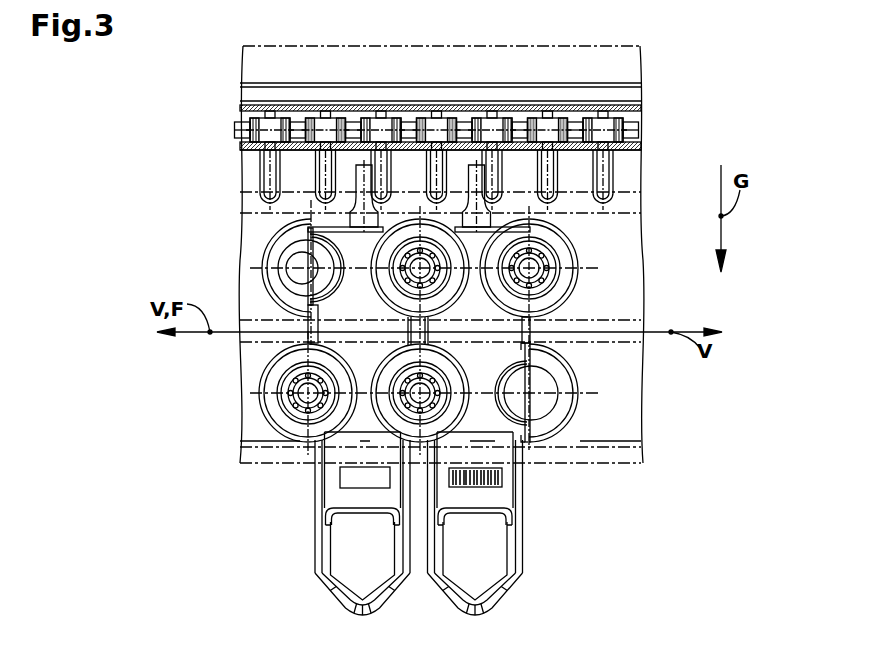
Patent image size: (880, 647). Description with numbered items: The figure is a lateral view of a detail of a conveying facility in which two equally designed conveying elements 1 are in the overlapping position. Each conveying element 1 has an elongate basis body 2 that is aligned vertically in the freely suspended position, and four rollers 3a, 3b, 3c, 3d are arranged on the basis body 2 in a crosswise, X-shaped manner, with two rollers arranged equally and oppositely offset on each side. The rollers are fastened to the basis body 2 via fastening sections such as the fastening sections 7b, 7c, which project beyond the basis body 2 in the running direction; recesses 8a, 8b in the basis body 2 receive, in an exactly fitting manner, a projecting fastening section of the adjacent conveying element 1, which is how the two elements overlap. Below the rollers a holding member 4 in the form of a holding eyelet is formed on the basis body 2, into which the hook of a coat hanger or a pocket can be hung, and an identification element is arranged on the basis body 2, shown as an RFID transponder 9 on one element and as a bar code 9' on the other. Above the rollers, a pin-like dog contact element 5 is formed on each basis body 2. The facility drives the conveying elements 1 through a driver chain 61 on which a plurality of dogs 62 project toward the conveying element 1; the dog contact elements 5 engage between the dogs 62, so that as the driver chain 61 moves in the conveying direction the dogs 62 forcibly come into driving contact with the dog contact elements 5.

The conveying element 1 is at (290, 544).
The basis body 2 is at (332, 474).
The roller 3a is at (565, 286).
The roller 3b is at (390, 420).
The roller 3c is at (279, 247).
The roller 3d is at (551, 427).
The holding member 4 is at (335, 565).
The dog contact element 5 is at (360, 213).
The fastening section 7b is at (543, 405).
The fastening section 7c is at (297, 277).
The recess 8a is at (322, 282).
The recess 8b is at (517, 379).
The RFID transponder 9 is at (315, 504).
The bar code 9' is at (516, 501).
The driver chain 61 is at (620, 133).
The dog 62 is at (553, 194).